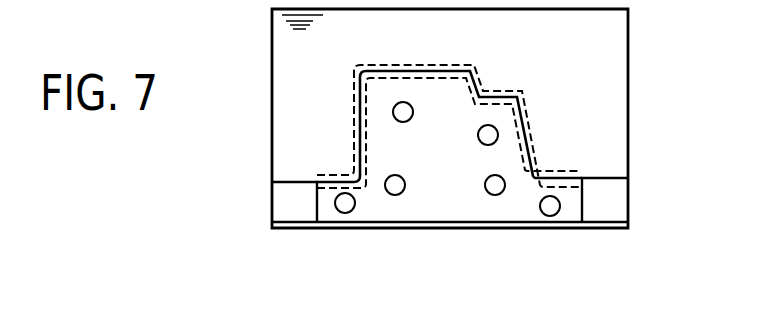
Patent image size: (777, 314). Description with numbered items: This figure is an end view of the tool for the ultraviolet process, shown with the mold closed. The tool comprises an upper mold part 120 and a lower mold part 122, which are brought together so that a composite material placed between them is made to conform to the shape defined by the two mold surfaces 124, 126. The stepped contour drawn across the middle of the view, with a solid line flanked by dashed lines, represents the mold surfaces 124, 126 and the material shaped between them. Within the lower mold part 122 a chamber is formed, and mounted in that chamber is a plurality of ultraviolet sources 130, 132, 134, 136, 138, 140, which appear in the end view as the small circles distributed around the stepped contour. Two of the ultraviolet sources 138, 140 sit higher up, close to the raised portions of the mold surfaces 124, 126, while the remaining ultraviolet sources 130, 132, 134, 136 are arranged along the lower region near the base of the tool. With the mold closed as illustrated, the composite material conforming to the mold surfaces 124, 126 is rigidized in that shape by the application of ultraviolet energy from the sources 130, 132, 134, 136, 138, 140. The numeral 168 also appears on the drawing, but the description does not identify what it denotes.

The upper mold part 120 is at (367, 91).
The lower mold part 122 is at (617, 178).
The mold surface 124 is at (537, 149).
The mold surface 126 is at (537, 166).
The ultraviolet source 130 is at (495, 195).
The ultraviolet source 132 is at (551, 216).
The ultraviolet source 134 is at (344, 213).
The ultraviolet source 136 is at (396, 195).
The ultraviolet source 138 is at (498, 137).
The ultraviolet source 140 is at (393, 112).
The housing 168 is at (450, 161).